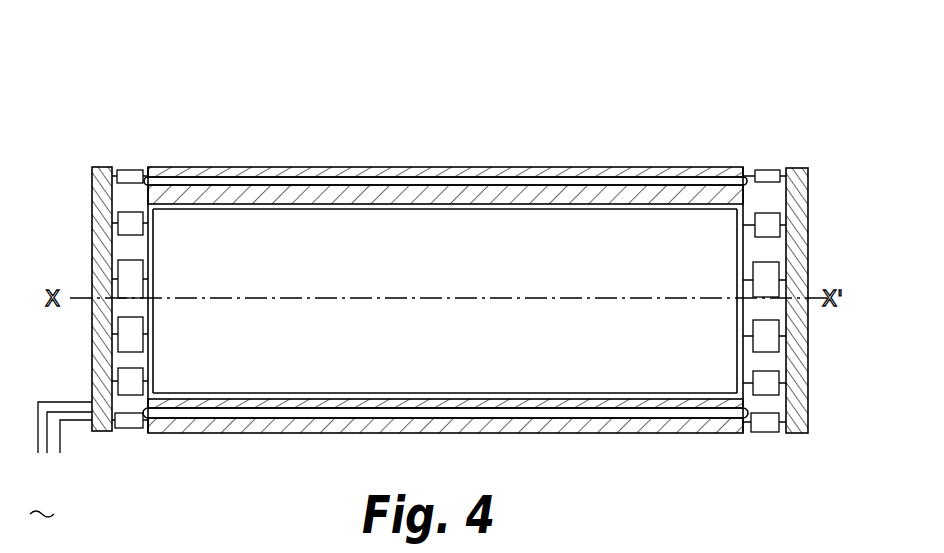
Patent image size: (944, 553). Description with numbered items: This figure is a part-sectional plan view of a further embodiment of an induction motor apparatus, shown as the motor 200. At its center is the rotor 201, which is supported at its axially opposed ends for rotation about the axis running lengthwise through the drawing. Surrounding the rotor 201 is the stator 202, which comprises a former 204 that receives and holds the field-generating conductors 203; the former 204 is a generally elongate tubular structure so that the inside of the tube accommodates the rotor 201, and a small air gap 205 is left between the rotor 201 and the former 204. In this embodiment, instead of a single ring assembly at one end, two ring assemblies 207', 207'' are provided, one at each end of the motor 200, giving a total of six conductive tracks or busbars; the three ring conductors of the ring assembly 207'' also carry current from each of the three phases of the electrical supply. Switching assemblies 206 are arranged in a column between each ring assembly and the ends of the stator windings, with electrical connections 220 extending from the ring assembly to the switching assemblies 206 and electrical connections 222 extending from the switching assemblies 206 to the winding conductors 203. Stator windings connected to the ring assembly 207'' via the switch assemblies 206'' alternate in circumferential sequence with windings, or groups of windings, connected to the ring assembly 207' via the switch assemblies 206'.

The motor 200 is at (522, 140).
The rotor 201 is at (658, 228).
The stator 202 is at (447, 160).
The field-generating conductors 203 is at (400, 180).
The former 204 is at (603, 172).
The air gap 205 is at (346, 207).
The switching assemblies 206 is at (97, 295).
The switch assemblies 206' is at (144, 297).
The switch assemblies 206'' is at (773, 268).
The ring assembly 207' is at (85, 283).
The ring assembly 207'' is at (799, 278).
The electrical connections 220 is at (117, 168).
The electrical connections 222 is at (152, 177).